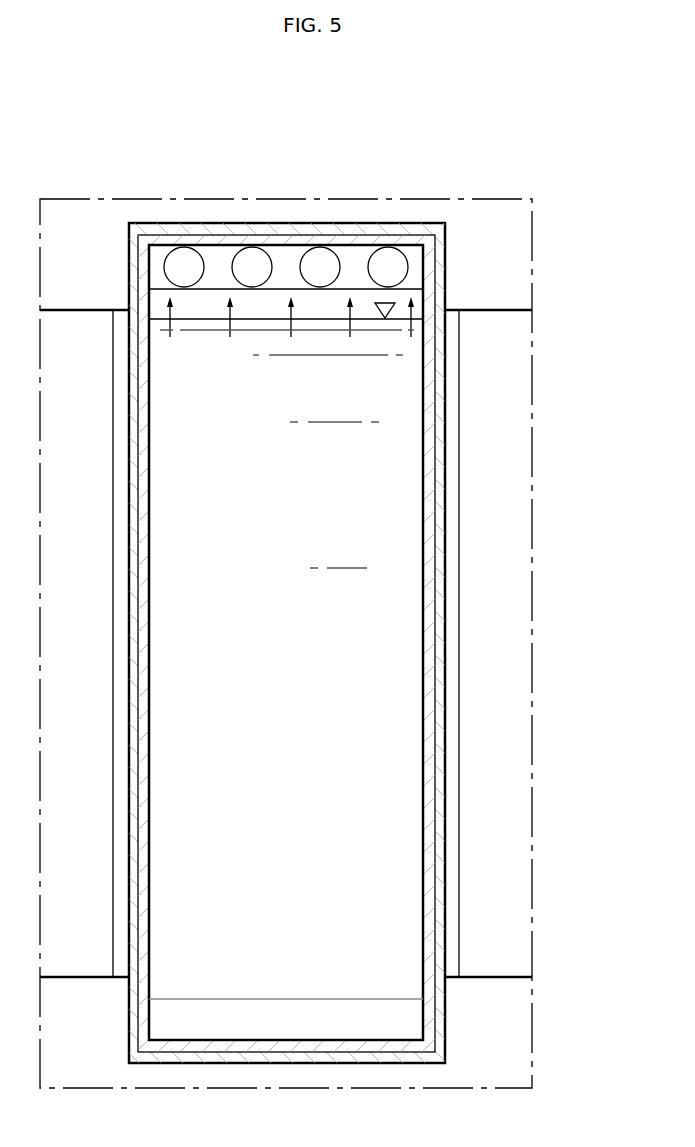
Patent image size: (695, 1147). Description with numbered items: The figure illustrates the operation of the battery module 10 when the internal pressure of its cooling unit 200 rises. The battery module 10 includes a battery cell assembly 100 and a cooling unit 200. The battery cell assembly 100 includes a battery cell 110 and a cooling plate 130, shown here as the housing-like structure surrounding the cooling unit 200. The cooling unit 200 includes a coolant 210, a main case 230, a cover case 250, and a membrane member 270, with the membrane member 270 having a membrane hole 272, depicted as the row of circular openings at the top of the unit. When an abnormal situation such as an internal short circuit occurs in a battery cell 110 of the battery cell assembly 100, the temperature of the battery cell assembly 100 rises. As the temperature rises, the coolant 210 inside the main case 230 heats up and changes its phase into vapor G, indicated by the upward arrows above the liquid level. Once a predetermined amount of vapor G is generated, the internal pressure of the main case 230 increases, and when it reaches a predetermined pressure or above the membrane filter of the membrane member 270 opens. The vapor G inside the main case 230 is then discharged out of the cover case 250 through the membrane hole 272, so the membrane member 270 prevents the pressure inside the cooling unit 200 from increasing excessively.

The battery module 10 is at (84, 132).
The battery cell assembly 100 is at (286, 603).
The battery cell 110 is at (505, 311).
The cooling plate 130 is at (453, 311).
The cooling unit 200 is at (358, 599).
The coolant 210 is at (385, 432).
The main case 230 is at (427, 377).
The cover case 250 is at (405, 228).
The membrane member 270 is at (286, 237).
The membrane hole 272 is at (250, 265).
The vapor G is at (171, 313).